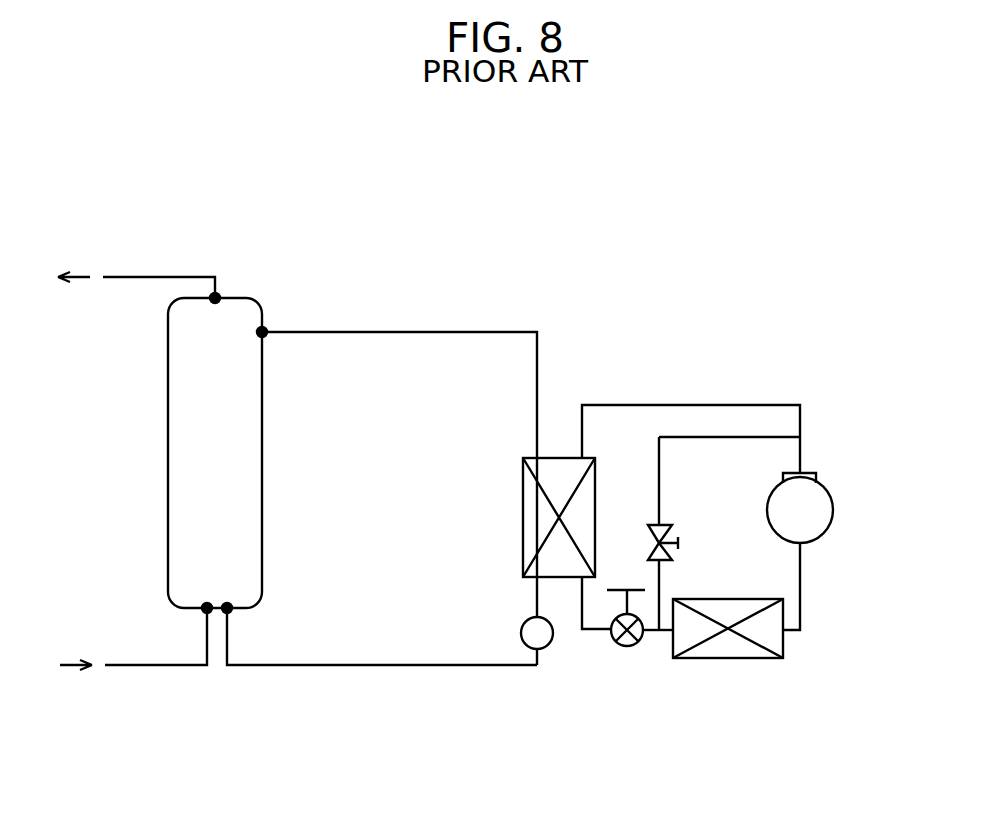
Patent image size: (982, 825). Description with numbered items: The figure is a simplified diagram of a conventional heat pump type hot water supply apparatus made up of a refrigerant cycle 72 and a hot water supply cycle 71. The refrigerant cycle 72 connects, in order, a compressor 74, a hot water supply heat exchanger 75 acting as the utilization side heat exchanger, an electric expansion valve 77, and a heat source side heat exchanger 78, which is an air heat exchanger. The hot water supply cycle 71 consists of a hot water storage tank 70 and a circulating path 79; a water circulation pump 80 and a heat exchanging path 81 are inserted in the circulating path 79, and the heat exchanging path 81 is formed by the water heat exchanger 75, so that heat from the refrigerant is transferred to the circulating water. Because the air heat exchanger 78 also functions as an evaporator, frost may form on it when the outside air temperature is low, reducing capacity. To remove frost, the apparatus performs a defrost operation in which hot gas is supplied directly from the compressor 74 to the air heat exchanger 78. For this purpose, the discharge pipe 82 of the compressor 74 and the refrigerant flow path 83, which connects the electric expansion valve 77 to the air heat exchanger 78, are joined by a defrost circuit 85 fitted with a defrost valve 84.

The hot water storage tank 70 is at (262, 455).
The hot water supply cycle 71 is at (276, 290).
The refrigerant cycle 72 is at (735, 389).
The compressor 74 is at (833, 527).
The hot water supply heat exchanger 75 is at (600, 508).
The electric expansion valve 77 is at (628, 648).
The heat source side heat exchanger 78 is at (727, 660).
The circulating path 79 is at (346, 665).
The water circulation pump 80 is at (520, 625).
The heat exchanging path 81 is at (537, 503).
The discharge pipe 82 is at (800, 425).
The refrigerant flow path 83 is at (650, 633).
The defrost valve 84 is at (683, 543).
The defrost circuit 85 is at (728, 440).